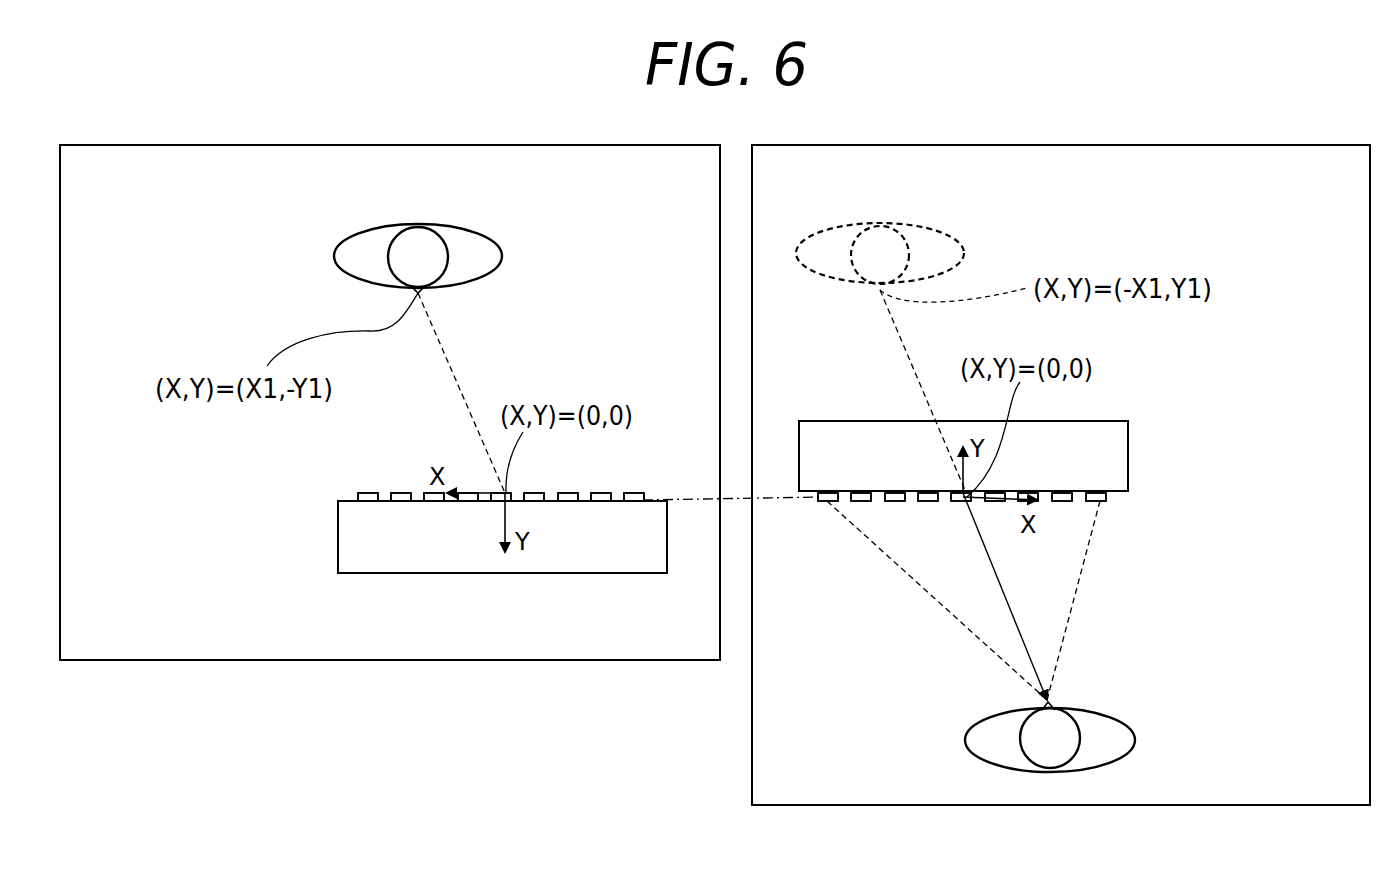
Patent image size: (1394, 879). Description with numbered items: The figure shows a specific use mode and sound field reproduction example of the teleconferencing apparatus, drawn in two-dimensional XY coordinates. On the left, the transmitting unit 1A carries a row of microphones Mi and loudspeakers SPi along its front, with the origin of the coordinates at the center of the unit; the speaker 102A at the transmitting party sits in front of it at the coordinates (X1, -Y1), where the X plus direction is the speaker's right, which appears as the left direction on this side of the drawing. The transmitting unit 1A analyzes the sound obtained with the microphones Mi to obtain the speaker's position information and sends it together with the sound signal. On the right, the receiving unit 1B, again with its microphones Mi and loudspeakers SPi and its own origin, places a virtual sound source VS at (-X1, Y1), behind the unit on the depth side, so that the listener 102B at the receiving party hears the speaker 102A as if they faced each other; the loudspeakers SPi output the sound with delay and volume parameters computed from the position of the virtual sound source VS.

The speaker at the transmitting party 102A is at (477, 243).
The listener at the receiving party 102B is at (1135, 740).
The virtual sound source VS is at (940, 240).
The transmitting unit 1A is at (624, 574).
The receiving unit 1B is at (810, 420).
The microphone Mi is at (368, 501).
The loudspeaker SPi is at (695, 504).